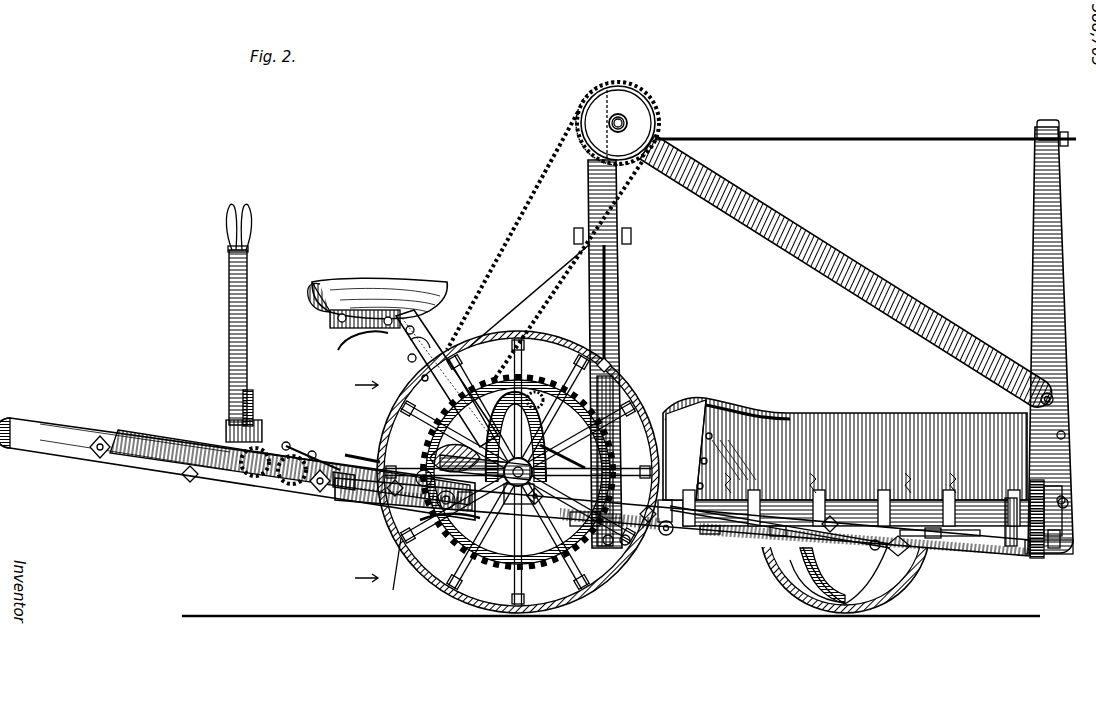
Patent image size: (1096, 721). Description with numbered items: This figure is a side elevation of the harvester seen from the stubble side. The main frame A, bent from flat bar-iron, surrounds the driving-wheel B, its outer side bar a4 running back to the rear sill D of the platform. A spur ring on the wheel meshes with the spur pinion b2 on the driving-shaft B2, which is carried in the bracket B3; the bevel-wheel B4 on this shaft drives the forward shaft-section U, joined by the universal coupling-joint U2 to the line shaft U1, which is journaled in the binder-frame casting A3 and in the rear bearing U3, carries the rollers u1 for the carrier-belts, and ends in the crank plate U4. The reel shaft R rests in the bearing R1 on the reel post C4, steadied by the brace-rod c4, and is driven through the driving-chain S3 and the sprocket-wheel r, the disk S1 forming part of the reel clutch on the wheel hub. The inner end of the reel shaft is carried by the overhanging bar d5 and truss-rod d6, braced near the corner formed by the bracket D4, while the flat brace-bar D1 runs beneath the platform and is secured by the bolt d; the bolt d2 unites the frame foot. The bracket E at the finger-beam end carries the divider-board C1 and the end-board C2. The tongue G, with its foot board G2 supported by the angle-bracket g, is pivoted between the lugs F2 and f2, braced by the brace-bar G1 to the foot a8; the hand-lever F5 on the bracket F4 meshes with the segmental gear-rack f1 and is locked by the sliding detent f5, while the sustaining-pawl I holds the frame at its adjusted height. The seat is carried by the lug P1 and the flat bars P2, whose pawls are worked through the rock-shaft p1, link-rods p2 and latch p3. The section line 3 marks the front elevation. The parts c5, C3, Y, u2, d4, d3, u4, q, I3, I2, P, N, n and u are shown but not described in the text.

The driving-wheel B is at (572, 368).
The spur pinion b2 is at (540, 392).
The universal coupling-joint U2 is at (540, 412).
The circular plate or disk S1 is at (545, 440).
The bevel-wheel B4 is at (440, 462).
The reel shaft R is at (618, 123).
The bearing R1 is at (630, 90).
The sprocket-wheel r is at (623, 130).
The driving-chain S3 is at (530, 190).
The brace-rod c4 is at (562, 280).
The reel post C4 is at (620, 308).
The standard bolt c5 is at (618, 350).
The binder-frame casting A3 is at (620, 384).
The overhanging bar d5 is at (922, 312).
The bracket or casting D4 is at (1028, 404).
The truss-rod d6 is at (950, 142).
The flat brace-bar D1 is at (1066, 360).
The rear sill D is at (1024, 555).
The end-board C2 is at (845, 449).
The divider-board C1 is at (692, 408).
The hopper rim C3 is at (728, 408).
The cast metal bracket E is at (712, 426).
The seed cups Y is at (856, 498).
The rollers u1 is at (828, 535).
The feed slide u2 is at (784, 536).
The rod coupling d4 is at (731, 527).
The feed rod d3 is at (880, 548).
The bolt d2 is at (664, 540).
The line shaft U1 is at (626, 532).
The main frame A is at (735, 556).
The frame bolt u4 is at (517, 509).
The outer side bar a4 is at (940, 540).
The frame bolts q is at (610, 543).
The driving-shaft B2 is at (412, 486).
The bracket B3 is at (435, 508).
The bolt d is at (440, 522).
The forwardly-projecting foot a8 is at (340, 492).
The tongue G is at (90, 428).
The foot board G2 is at (150, 433).
The brace-bar G1 is at (220, 477).
The angle-bracket g is at (125, 432).
The hand-lever F5 is at (248, 372).
The sliding detent f5 is at (256, 422).
The bracket F4 is at (226, 430).
The segmental gear-rack f1 is at (285, 498).
The lug f2 is at (248, 492).
The link pin I3 is at (280, 438).
The link pin I2 is at (306, 445).
The lug F2 is at (334, 466).
The sustaining-pawl I is at (362, 447).
The seat P is at (378, 292).
The downwardly-projecting lug P1 is at (342, 326).
The finger-piece or latch p3 is at (355, 348).
The flat bars P2 is at (406, 340).
The rock-shaft p1 is at (420, 352).
The link-rods p2 is at (412, 366).
The section line 3 is at (378, 484).
The rear wheel N is at (860, 570).
The box or bearing U3 is at (1010, 550).
The crank plate or disk U4 is at (1044, 556).
The pin n is at (1070, 503).
The forward shaft-section U is at (1072, 516).
The adjusting bolt u is at (1072, 540).